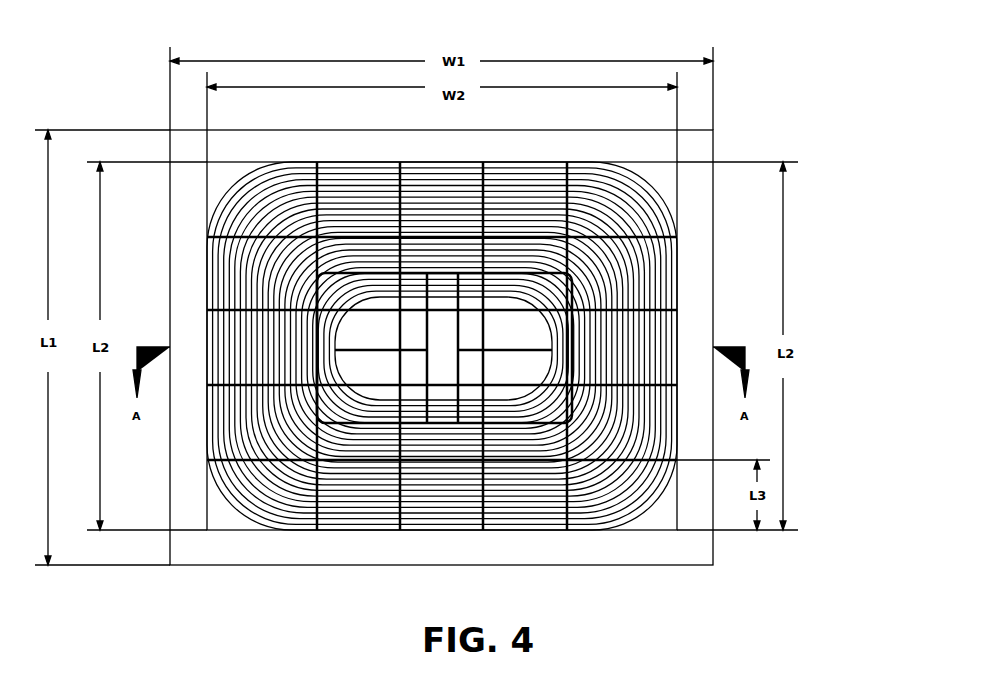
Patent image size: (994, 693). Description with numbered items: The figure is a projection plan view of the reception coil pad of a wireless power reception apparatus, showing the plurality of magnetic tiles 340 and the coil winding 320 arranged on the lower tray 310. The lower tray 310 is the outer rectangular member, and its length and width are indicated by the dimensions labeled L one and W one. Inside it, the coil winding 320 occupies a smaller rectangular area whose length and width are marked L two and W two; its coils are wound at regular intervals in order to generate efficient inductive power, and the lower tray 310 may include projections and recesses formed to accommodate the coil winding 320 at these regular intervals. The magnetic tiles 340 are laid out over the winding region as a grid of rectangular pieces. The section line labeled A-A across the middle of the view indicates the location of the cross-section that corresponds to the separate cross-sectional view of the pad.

The lower tray 310 is at (713, 143).
The coil winding 320 is at (677, 192).
The magnetic tiles 340 is at (677, 287).